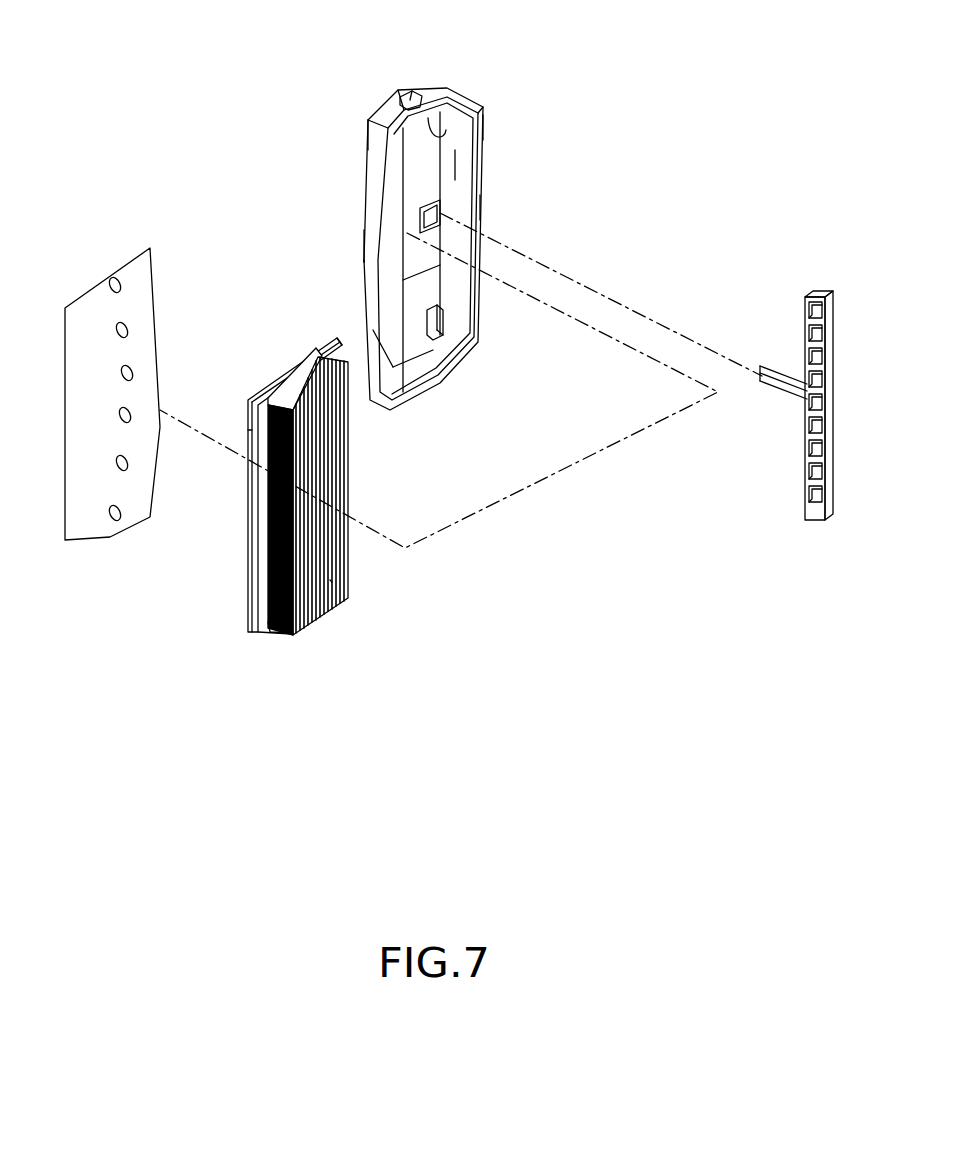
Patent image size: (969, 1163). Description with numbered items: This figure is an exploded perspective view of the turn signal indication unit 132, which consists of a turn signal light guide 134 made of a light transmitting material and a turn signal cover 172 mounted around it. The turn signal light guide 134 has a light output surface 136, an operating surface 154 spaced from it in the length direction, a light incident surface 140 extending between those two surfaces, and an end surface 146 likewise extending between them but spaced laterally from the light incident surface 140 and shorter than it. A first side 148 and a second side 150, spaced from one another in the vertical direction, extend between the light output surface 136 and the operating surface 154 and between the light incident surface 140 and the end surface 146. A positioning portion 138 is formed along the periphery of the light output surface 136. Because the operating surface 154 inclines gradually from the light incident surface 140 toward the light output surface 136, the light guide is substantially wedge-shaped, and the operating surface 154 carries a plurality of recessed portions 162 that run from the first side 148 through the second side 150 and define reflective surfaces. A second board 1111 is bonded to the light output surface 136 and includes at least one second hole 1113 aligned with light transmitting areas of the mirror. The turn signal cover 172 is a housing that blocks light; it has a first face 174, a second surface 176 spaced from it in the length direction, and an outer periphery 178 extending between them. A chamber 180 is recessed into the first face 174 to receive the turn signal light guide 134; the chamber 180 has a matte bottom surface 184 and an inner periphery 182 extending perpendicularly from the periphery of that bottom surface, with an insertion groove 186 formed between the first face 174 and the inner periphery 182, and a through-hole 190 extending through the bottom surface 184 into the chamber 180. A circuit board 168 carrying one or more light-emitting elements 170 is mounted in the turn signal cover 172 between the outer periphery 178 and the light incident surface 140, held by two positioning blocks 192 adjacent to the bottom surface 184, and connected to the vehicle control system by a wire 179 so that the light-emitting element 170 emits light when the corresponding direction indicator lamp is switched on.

The turn signal indication unit 132 is at (248, 112).
The turn signal light guide 134 is at (222, 630).
The light output surface 136 is at (262, 388).
The positioning portion 138 is at (250, 432).
The light incident surface 140 is at (267, 625).
The end surface 146 is at (352, 465).
The first side 148 is at (300, 635).
The second side 150 is at (325, 348).
The operating surface 154 is at (352, 594).
The recessed portions 162 is at (330, 510).
The circuit board 168 is at (818, 296).
The light-emitting element 170 is at (818, 510).
The turn signal cover 172 is at (375, 186).
The first face 174 is at (488, 206).
The second surface 176 is at (370, 142).
The outer periphery 178 is at (372, 240).
The wire 179 is at (778, 368).
The chamber 180 is at (458, 165).
The inner periphery 182 is at (420, 290).
The bottom surface 184 is at (448, 345).
The insertion groove 186 is at (486, 128).
The through-hole 190 is at (444, 222).
The positioning blocks 192 is at (416, 100).
The second board 1111 is at (108, 540).
The second hole 1113 is at (121, 280).